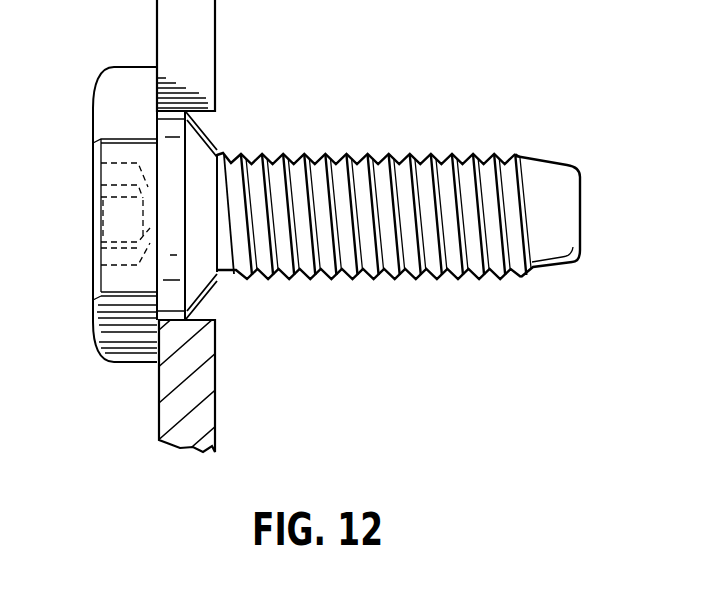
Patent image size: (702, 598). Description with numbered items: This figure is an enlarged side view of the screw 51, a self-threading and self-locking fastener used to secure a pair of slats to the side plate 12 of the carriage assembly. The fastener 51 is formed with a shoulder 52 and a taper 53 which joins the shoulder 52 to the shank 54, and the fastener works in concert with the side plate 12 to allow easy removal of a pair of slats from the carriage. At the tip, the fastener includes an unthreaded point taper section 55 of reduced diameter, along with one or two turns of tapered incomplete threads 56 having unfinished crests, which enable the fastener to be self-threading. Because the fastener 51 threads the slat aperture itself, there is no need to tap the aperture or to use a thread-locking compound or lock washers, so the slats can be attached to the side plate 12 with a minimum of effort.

The side plate 12 is at (197, 43).
The screw 51 is at (360, 232).
The shoulder 52 is at (176, 121).
The taper 53 is at (203, 290).
The shank 54 is at (417, 157).
The point taper section 55 is at (557, 178).
The tapered incomplete threads 56 is at (510, 158).